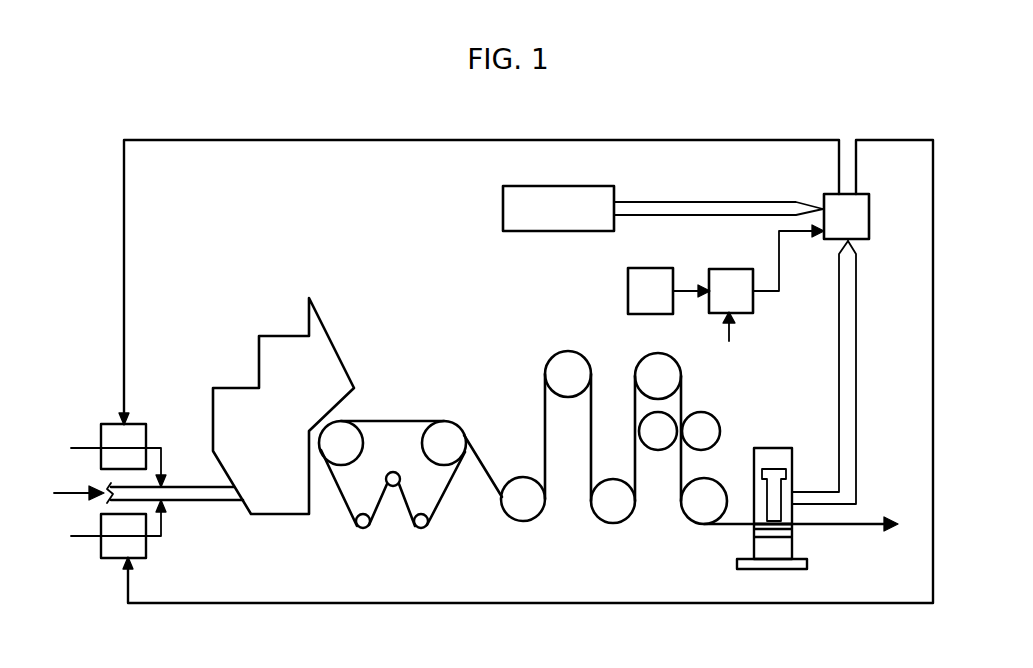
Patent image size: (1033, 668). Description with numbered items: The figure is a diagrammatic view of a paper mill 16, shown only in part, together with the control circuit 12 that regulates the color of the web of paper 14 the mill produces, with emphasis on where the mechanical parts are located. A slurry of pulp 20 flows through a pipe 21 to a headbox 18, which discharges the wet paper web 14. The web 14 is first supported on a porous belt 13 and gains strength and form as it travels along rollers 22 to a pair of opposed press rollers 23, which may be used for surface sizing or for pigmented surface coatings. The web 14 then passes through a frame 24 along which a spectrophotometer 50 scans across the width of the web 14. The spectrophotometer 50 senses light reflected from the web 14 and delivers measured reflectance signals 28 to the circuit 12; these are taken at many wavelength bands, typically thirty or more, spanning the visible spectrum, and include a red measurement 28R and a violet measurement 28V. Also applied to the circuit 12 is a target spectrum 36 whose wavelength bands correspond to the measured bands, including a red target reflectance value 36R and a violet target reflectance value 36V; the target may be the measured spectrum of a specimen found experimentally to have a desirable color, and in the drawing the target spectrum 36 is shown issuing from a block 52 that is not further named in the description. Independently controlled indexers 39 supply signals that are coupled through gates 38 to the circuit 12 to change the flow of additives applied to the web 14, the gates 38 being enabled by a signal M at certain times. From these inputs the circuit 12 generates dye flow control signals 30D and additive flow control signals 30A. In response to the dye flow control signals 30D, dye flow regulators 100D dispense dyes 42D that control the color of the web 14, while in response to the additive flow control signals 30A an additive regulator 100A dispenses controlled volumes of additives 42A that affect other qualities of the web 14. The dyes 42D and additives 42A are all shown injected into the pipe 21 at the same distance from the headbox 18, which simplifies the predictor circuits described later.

The control circuit 12 is at (823, 195).
The porous belt 13 is at (447, 490).
The web of paper 14 is at (482, 468).
The paper mill 16 is at (443, 318).
The headbox 18 is at (258, 376).
The slurry of pulp 20 is at (78, 488).
The pipe 21 is at (210, 484).
The rollers 22 is at (567, 398).
The press rollers 23 is at (690, 448).
The frame 24 is at (758, 488).
The measured reflectance signals 28 is at (826, 430).
The red measurement 28R is at (837, 362).
The violet measurement 28V is at (863, 367).
The additive flow control signals 30A is at (297, 602).
The dye flow control signals 30D is at (123, 278).
The target spectrum 36 is at (718, 208).
The red target reflectance value 36R is at (722, 201).
The violet target reflectance value 36V is at (705, 216).
The gates 38 is at (720, 266).
The indexers 39 is at (627, 295).
The additives 42A is at (160, 522).
The dyes 42D is at (152, 446).
The spectrophotometer 50 is at (753, 510).
The setpoint unit 52 is at (500, 208).
The additive regulator 100A is at (100, 540).
The dye flow regulators 100D is at (100, 440).